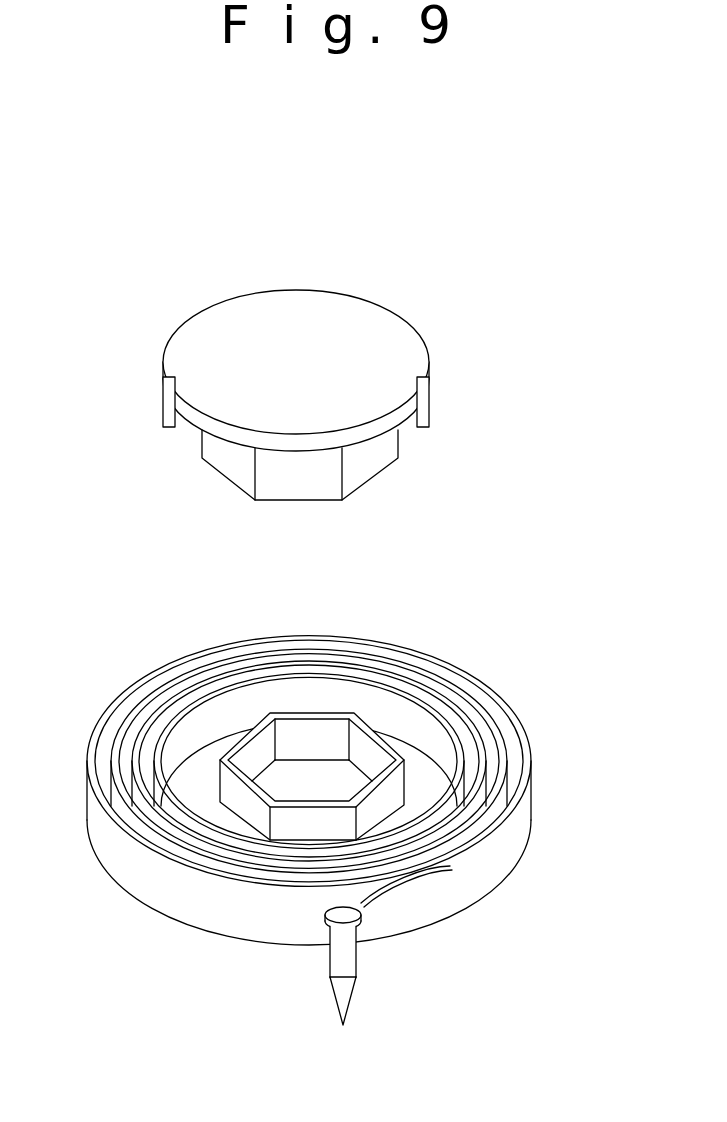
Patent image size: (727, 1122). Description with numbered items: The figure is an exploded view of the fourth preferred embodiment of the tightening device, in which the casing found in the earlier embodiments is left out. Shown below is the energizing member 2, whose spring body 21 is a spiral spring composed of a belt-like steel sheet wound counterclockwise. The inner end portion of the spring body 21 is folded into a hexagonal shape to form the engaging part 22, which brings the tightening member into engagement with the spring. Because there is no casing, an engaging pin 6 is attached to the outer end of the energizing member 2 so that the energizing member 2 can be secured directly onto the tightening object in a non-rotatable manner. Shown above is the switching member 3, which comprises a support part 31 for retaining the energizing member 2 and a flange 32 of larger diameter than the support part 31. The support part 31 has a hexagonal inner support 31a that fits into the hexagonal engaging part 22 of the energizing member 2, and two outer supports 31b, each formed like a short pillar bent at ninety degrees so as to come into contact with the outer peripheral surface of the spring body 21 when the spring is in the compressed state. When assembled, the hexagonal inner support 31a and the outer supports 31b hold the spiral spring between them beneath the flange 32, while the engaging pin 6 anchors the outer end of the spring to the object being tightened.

The energizing member 2 is at (343, 812).
The spring body 21 is at (497, 870).
The engaging part 22 is at (334, 735).
The switching member 3 is at (297, 387).
The support part 31 is at (275, 500).
The hexagonal inner support 31a is at (305, 487).
The outer supports 31b is at (163, 421).
The flange 32 is at (253, 303).
The engaging pin 6 is at (352, 993).